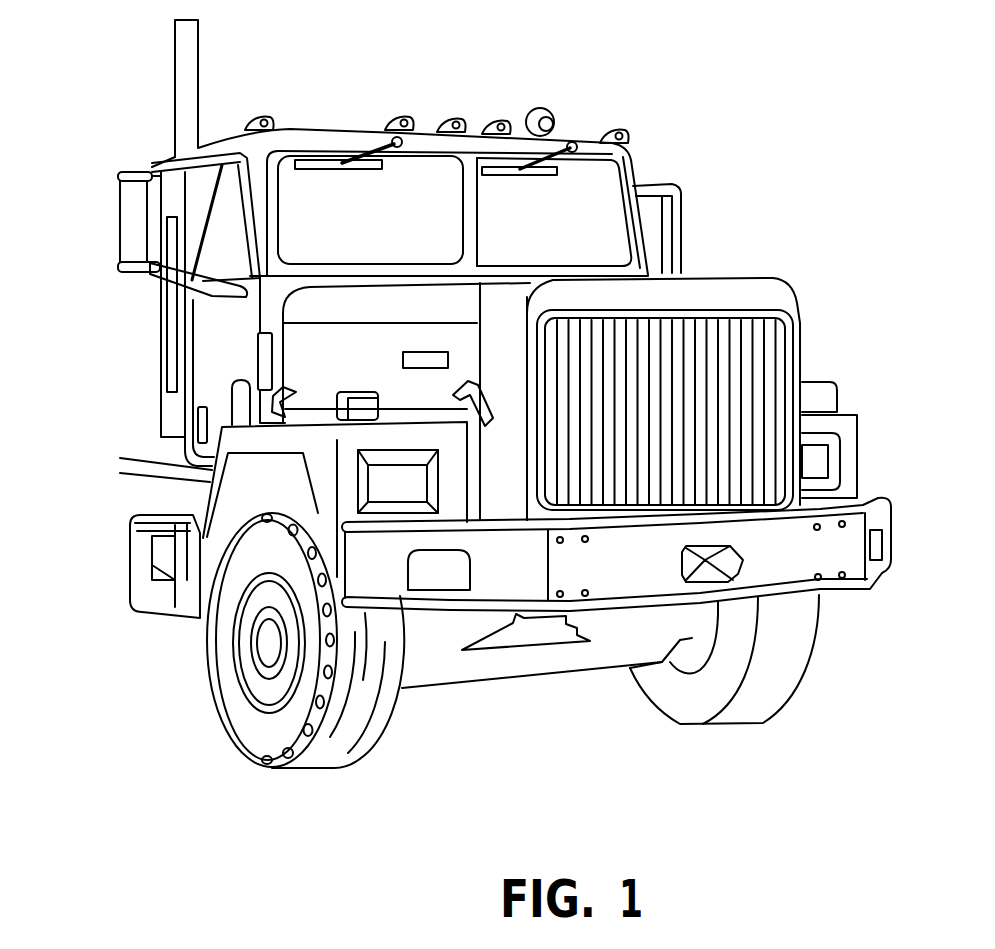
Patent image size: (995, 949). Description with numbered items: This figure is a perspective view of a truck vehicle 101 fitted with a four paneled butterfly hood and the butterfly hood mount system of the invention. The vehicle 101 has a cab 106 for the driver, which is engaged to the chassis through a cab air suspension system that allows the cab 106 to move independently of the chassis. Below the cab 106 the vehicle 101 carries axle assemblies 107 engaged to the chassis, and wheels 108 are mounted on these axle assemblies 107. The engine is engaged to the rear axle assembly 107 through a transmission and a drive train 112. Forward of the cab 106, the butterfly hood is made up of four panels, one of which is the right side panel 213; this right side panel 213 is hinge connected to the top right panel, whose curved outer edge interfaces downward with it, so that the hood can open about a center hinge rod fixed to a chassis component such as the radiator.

The truck vehicle 101 is at (616, 371).
The cab 106 is at (341, 114).
The drive train 112 is at (407, 312).
The right side panel 213 is at (312, 362).
The axle assemblies 107 is at (477, 658).
The wheels 108 is at (247, 717).